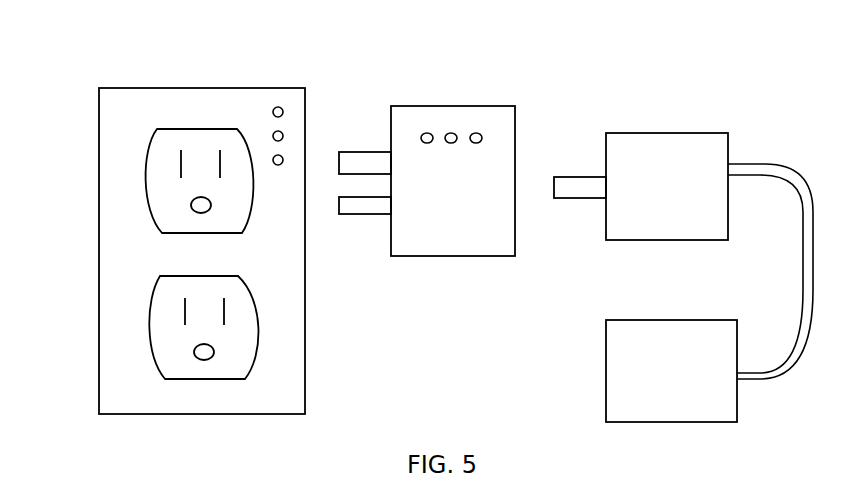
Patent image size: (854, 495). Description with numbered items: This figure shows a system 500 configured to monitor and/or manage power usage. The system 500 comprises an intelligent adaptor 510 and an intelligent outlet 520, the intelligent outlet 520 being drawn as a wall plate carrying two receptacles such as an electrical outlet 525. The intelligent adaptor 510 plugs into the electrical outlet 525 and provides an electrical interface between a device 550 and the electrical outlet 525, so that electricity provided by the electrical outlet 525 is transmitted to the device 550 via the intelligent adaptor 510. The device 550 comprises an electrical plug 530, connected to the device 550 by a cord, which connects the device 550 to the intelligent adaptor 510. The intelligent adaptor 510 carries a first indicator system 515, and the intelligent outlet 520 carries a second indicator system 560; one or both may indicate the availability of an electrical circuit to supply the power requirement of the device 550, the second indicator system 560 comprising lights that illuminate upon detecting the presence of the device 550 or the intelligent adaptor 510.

The system 500 is at (618, 46).
The intelligent adaptor 510 is at (436, 230).
The first indicator system 515 is at (443, 128).
The intelligent outlet 520 is at (130, 417).
The electrical outlet 525 is at (163, 120).
The electrical plug 530 is at (650, 197).
The device 550 is at (655, 384).
The second indicator system 560 is at (275, 98).